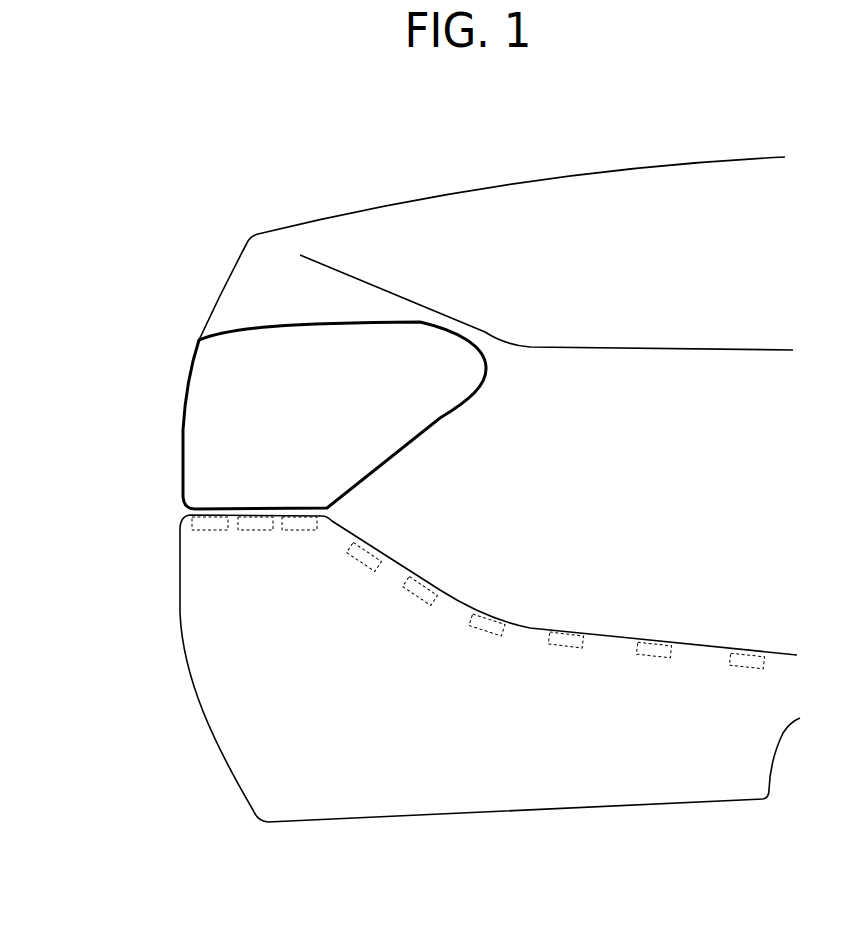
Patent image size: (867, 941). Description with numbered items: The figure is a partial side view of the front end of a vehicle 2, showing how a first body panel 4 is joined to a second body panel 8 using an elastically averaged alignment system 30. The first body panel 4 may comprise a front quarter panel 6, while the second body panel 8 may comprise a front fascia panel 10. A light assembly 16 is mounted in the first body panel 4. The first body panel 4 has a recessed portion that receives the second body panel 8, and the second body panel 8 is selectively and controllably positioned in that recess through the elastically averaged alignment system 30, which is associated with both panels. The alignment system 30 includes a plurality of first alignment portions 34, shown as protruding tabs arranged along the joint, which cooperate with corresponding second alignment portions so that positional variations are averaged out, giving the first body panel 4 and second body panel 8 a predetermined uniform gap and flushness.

The vehicle 2 is at (212, 200).
The first body panel 4 is at (232, 297).
The front quarter panel 6 is at (472, 485).
The second body panel 8 is at (200, 667).
The front fascia panel 10 is at (367, 793).
The light assembly 16 is at (198, 396).
The elastically averaged alignment system 30 is at (572, 700).
The first alignment portion 34 is at (563, 630).